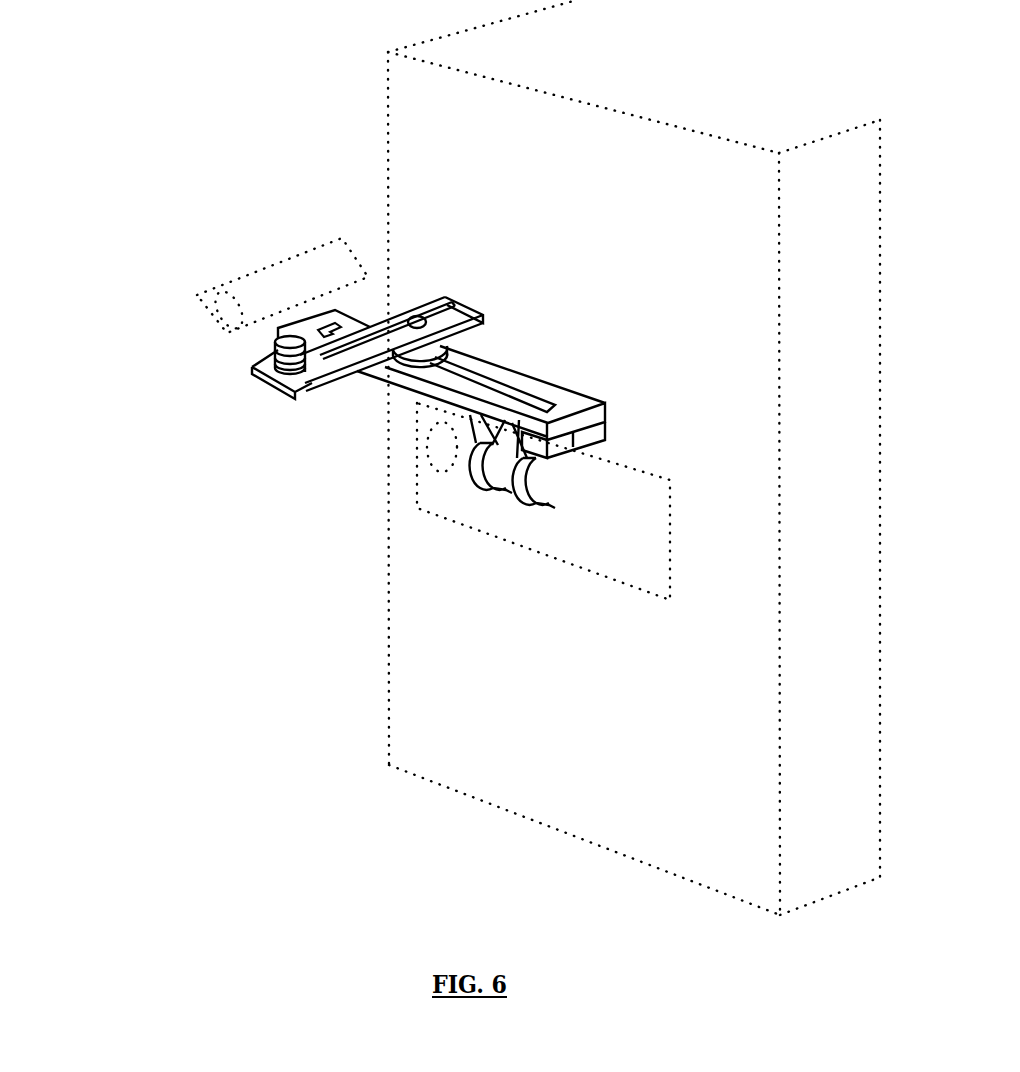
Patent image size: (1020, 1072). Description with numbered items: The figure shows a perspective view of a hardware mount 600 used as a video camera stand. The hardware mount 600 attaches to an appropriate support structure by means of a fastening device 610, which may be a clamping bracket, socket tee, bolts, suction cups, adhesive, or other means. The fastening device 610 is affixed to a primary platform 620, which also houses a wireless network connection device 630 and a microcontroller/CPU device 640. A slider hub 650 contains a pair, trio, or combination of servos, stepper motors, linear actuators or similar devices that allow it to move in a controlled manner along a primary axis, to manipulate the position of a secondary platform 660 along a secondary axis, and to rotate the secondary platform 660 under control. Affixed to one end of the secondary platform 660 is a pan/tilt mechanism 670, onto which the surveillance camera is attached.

The hardware mount 600 is at (235, 187).
The fastening device 610 is at (513, 512).
The primary platform 620 is at (590, 397).
The wireless network connection device 630 is at (543, 455).
The microcontroller/CPU device 640 is at (568, 450).
The slider hub 650 is at (447, 348).
The secondary platform 660 is at (463, 307).
The pan/tilt mechanism 670 is at (306, 370).